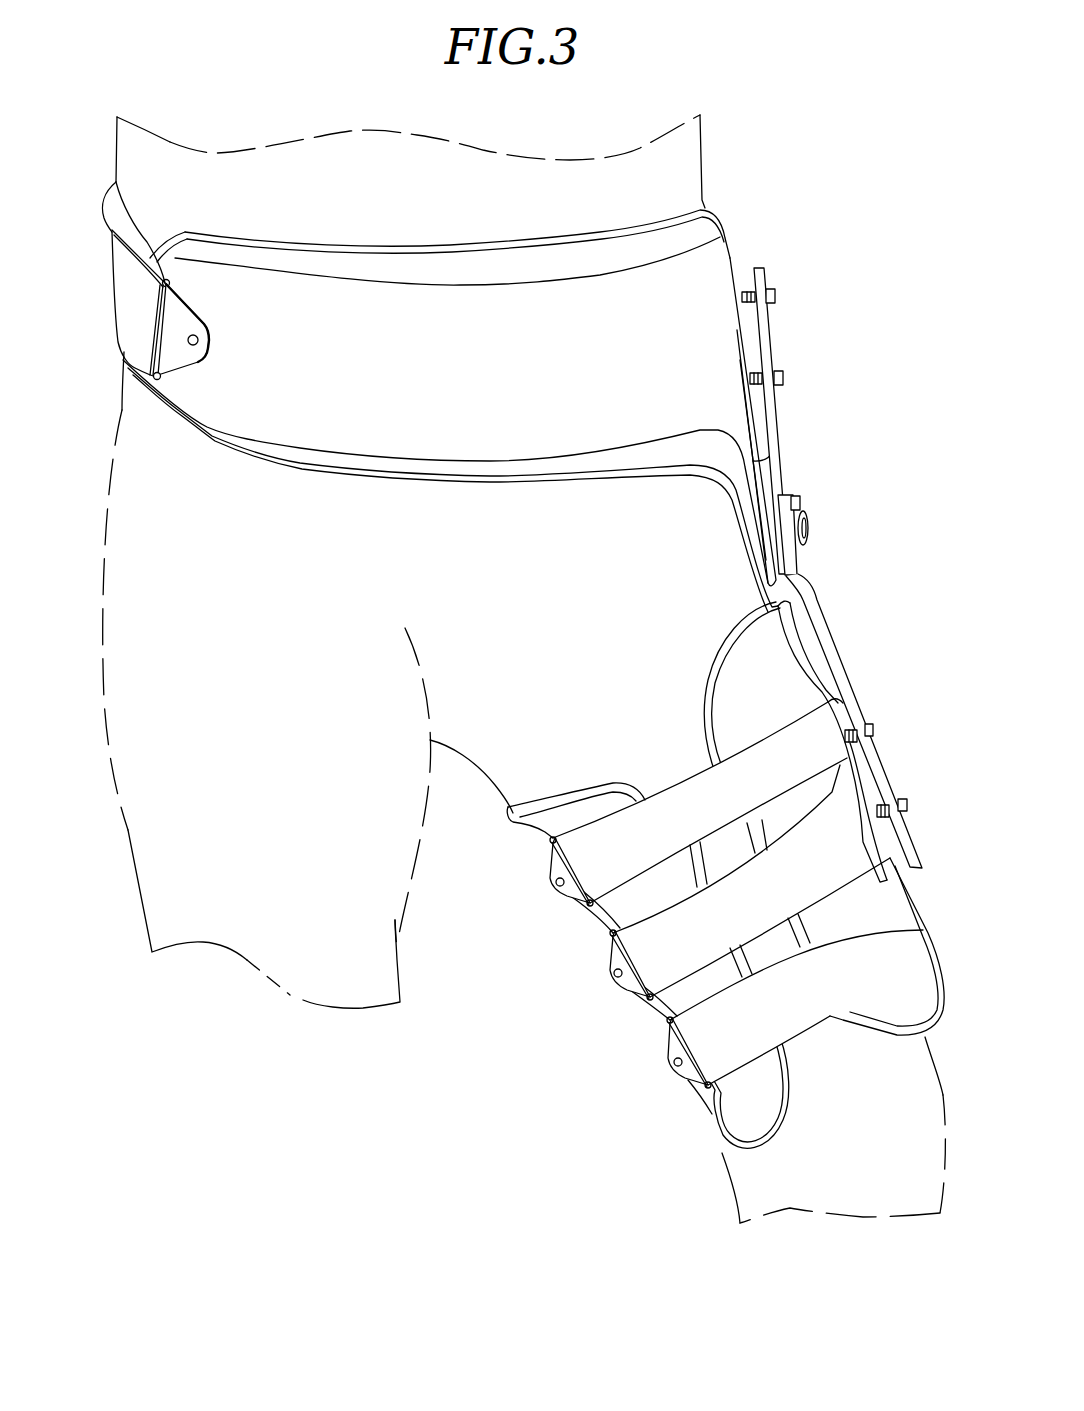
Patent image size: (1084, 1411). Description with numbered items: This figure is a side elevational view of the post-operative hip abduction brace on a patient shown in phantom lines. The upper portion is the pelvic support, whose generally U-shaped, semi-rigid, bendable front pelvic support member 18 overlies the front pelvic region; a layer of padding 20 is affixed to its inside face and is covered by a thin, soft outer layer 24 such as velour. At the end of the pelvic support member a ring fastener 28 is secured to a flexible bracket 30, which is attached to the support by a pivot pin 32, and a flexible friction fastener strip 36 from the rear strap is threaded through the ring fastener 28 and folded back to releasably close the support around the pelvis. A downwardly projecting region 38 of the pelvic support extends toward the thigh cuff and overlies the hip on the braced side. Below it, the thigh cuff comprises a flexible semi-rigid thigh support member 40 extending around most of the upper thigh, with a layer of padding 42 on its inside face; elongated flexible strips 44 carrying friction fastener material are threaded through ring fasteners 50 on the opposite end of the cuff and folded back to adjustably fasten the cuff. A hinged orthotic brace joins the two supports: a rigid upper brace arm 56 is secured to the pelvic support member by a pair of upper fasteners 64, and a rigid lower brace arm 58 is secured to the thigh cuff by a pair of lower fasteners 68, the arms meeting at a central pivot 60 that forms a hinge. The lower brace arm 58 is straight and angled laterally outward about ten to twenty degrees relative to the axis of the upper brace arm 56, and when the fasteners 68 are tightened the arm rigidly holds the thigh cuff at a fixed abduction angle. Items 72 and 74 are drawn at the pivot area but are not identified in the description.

The front pelvic support member 18 is at (411, 377).
The layer of padding 20 is at (420, 267).
The outer layer 24 is at (700, 450).
The ring fastener 28 is at (160, 275).
The flexible bracket 30 is at (180, 365).
The pivot pin 32 is at (186, 333).
The flexible friction fastener strip 36 is at (140, 303).
The downwardly projecting region 38 is at (757, 506).
The thigh support member 40 is at (795, 642).
The layer of padding 42 is at (738, 688).
The flexible strip 44 is at (689, 817).
The ring fastener 50 is at (587, 907).
The upper brace arm 56 is at (770, 337).
The lower brace arm 58 is at (841, 677).
The central pivot 60 is at (808, 535).
The upper fastener 64 is at (770, 291).
The lower fastener 68 is at (865, 727).
The bracket 72 is at (786, 523).
The sleeve 74 is at (799, 565).